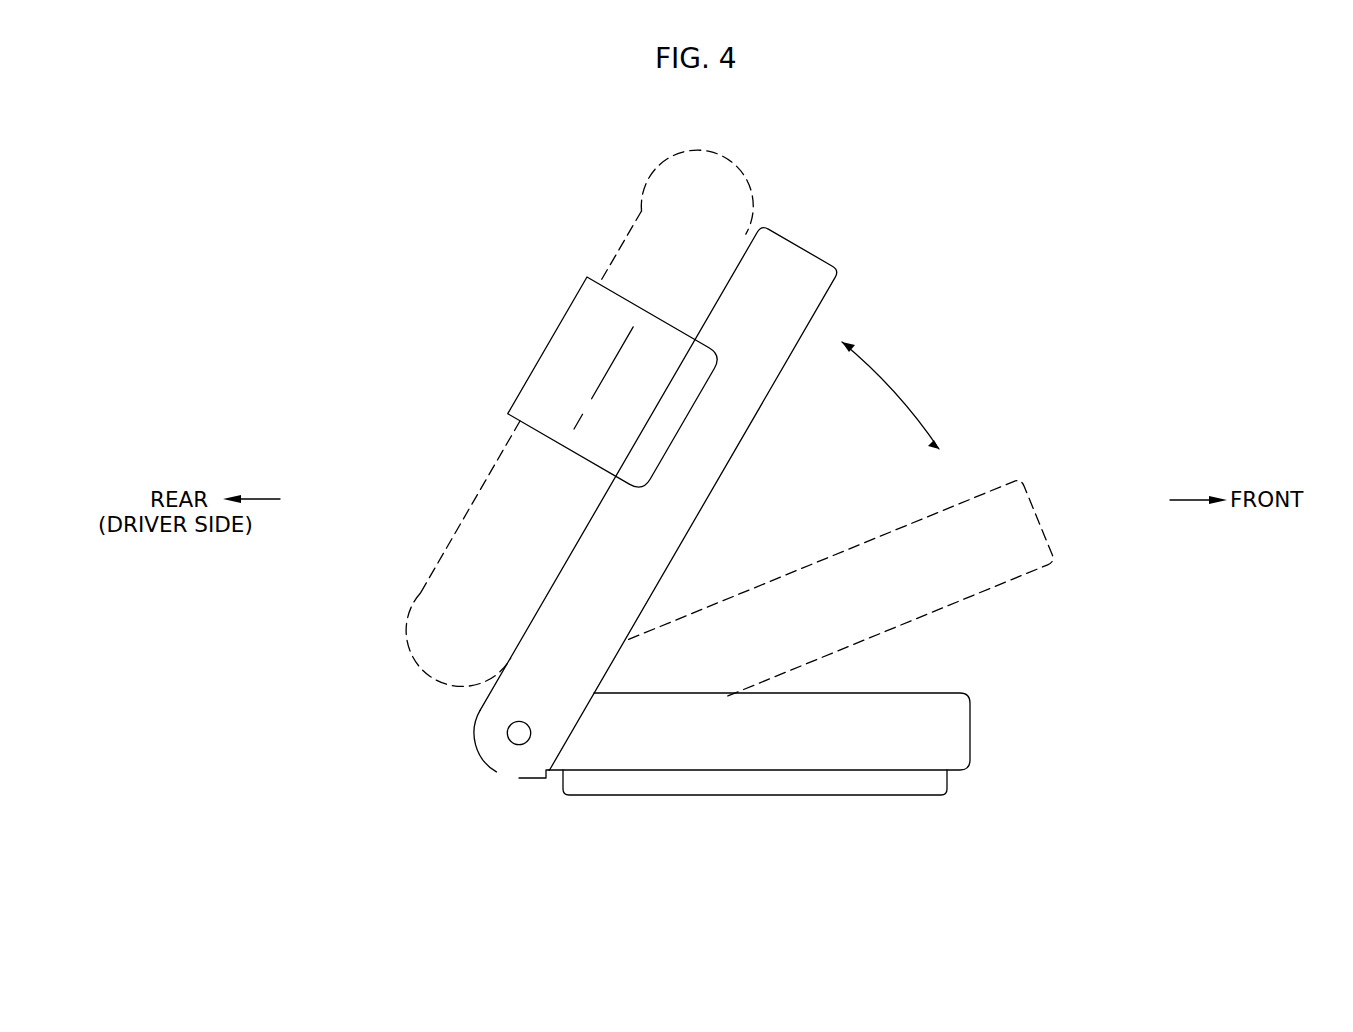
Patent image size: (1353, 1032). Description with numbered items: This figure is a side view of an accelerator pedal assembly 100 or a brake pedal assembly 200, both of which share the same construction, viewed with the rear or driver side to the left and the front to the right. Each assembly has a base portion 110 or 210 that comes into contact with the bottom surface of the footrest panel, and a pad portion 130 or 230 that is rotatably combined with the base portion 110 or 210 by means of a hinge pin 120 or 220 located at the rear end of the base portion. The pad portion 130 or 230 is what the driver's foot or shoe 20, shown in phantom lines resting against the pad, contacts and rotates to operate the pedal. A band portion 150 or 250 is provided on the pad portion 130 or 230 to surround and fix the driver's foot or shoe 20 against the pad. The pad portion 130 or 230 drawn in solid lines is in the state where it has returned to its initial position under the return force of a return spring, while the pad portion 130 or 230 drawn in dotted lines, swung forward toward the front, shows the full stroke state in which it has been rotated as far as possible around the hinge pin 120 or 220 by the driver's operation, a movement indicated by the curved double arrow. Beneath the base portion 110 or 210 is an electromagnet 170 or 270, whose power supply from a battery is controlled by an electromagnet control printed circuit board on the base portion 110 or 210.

The driver's foot or shoe 20 is at (483, 482).
The accelerator pedal assembly 100 is at (790, 518).
The brake pedal assembly 200 is at (790, 518).
The base portion 110 is at (744, 794).
The base portion 210 is at (730, 748).
The hinge pin 120 is at (527, 801).
The hinge pin 220 is at (519, 735).
The pad portion 130 is at (843, 464).
The pad portion 230 is at (801, 260).
The band portion 150 is at (537, 384).
The band portion 250 is at (573, 353).
The electromagnet 170 is at (755, 836).
The electromagnet 270 is at (868, 780).